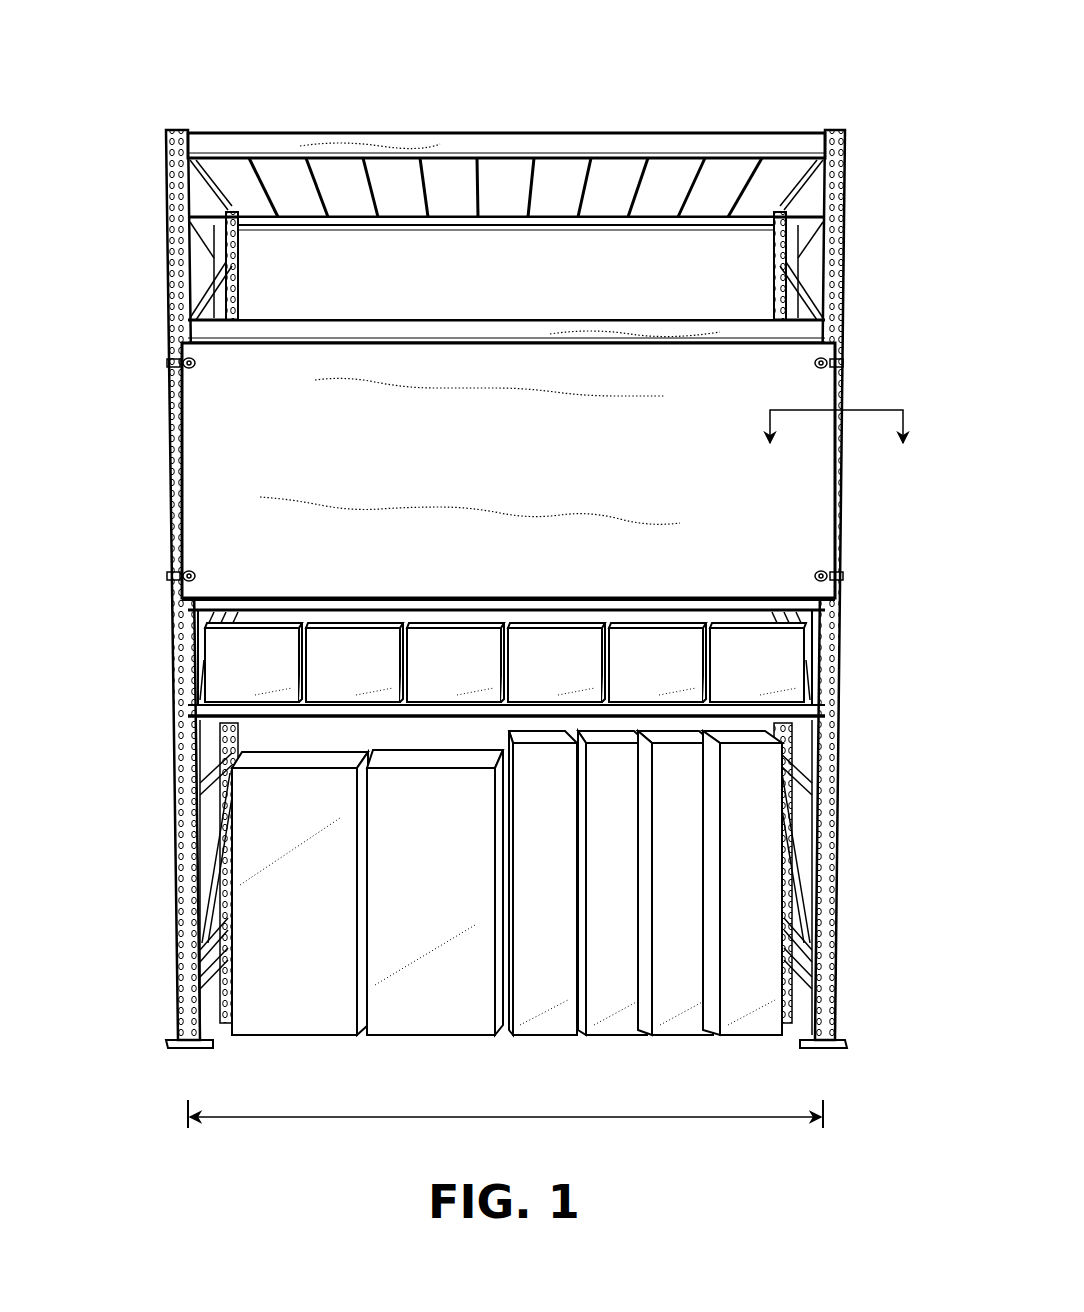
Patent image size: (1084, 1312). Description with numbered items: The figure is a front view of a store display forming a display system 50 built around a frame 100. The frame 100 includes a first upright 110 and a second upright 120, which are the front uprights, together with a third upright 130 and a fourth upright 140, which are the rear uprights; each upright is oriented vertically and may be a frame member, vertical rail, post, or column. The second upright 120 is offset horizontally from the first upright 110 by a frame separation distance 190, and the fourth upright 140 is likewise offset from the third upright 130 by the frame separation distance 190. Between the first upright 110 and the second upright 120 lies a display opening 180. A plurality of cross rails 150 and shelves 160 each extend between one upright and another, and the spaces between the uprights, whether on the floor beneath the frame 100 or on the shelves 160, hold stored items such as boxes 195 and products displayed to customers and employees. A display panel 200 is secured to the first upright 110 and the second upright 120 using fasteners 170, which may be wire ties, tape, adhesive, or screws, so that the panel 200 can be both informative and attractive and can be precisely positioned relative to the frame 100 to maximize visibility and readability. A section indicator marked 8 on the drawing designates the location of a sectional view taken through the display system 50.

The display system 50 is at (860, 80).
The frame 100 is at (236, 135).
The first upright 110 is at (170, 130).
The second upright 120 is at (830, 130).
The third upright 130 is at (230, 296).
The fourth upright 140 is at (778, 284).
The cross rails 150 is at (517, 318).
The shelves 160 is at (200, 713).
The fasteners 170 is at (167, 363).
The display opening 180 is at (238, 421).
The frame separation distance 190 is at (493, 1118).
The boxes 195 is at (780, 663).
The display panel 200 is at (531, 477).
The section line 8- 8 is at (836, 444).